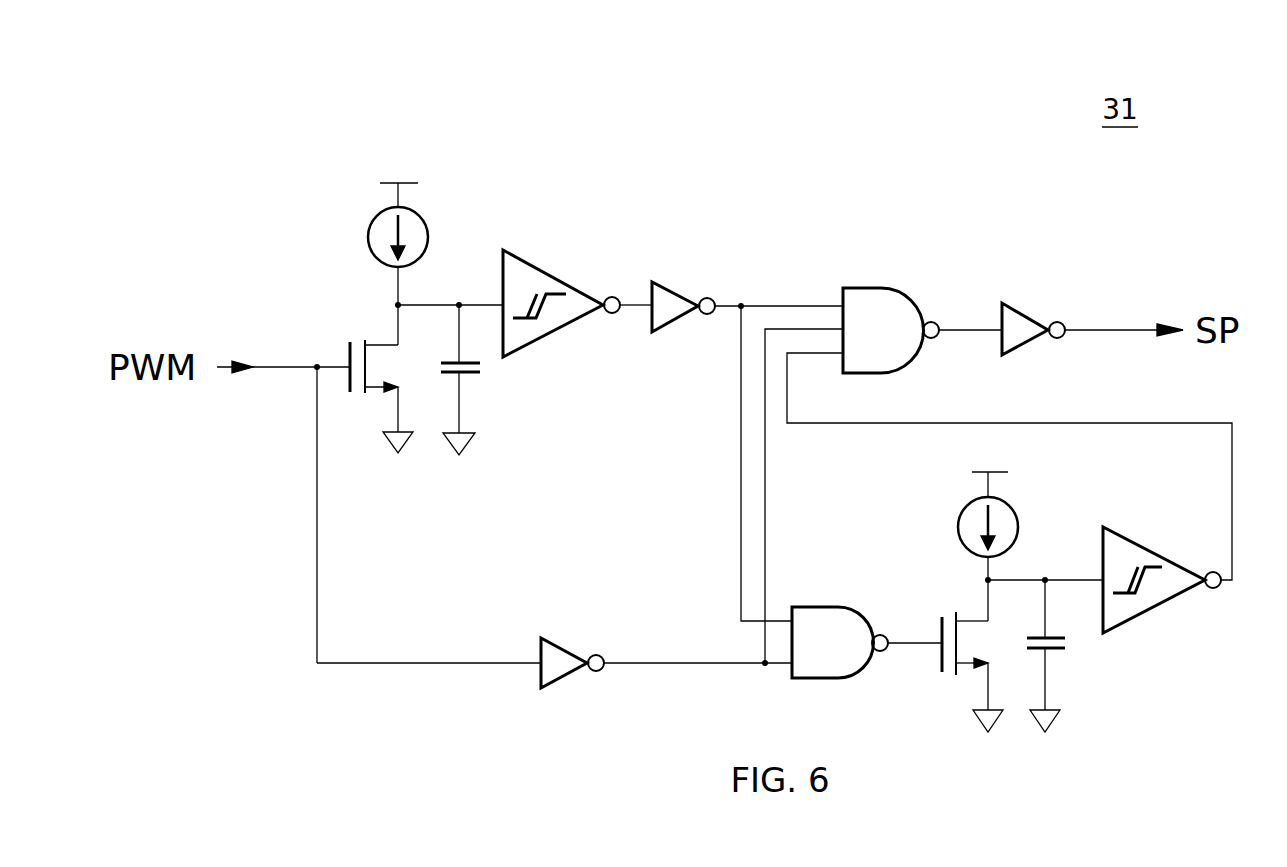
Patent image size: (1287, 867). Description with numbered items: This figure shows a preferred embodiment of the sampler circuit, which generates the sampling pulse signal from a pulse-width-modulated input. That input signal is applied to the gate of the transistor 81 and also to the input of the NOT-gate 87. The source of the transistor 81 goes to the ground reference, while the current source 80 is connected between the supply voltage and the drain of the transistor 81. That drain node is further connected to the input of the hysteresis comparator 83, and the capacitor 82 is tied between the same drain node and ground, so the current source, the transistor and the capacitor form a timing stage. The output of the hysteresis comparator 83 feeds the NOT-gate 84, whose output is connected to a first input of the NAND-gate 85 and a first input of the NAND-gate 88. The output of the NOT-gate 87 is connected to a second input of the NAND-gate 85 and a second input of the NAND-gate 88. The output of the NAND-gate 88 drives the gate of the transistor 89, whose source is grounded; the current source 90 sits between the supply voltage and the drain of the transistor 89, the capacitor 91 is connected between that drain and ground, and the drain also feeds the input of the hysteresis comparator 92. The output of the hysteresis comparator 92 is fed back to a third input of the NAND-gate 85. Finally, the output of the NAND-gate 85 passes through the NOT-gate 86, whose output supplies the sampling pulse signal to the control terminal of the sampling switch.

The current source 80 is at (366, 252).
The transistor 81 is at (340, 348).
The capacitor 82 is at (485, 368).
The hysteresis comparator 83 is at (540, 258).
The NOT-gate 84 is at (676, 285).
The NAND-gate 85 is at (863, 285).
The NOT-gate 86 is at (1020, 305).
The NOT-gate 87 is at (533, 642).
The NAND-gate 88 is at (805, 600).
The transistor 89 is at (942, 673).
The current source 90 is at (1020, 508).
The capacitor 91 is at (1063, 655).
The hysteresis comparator 92 is at (1147, 617).